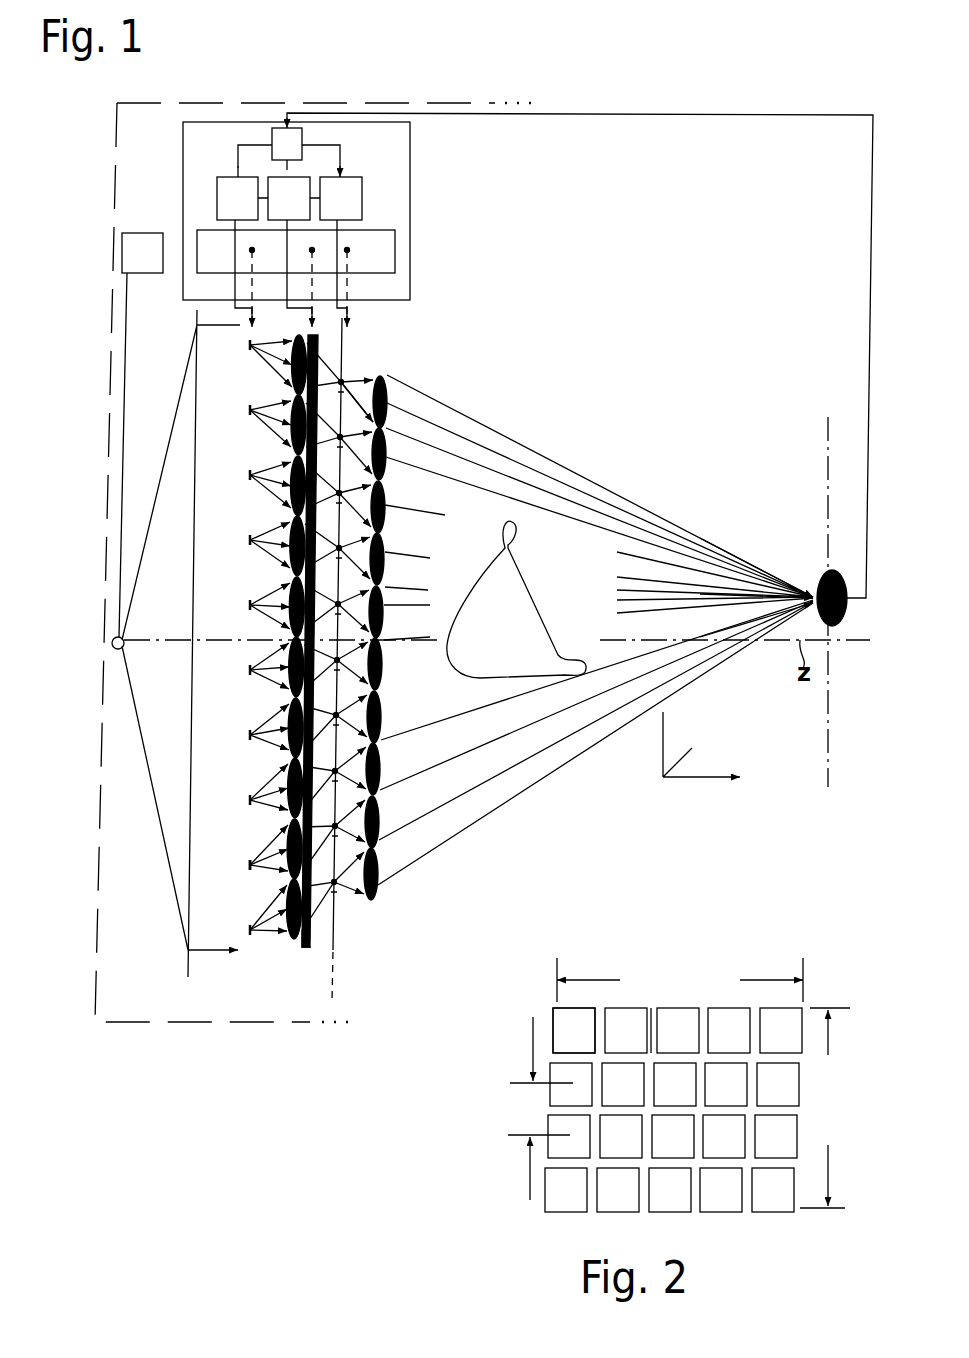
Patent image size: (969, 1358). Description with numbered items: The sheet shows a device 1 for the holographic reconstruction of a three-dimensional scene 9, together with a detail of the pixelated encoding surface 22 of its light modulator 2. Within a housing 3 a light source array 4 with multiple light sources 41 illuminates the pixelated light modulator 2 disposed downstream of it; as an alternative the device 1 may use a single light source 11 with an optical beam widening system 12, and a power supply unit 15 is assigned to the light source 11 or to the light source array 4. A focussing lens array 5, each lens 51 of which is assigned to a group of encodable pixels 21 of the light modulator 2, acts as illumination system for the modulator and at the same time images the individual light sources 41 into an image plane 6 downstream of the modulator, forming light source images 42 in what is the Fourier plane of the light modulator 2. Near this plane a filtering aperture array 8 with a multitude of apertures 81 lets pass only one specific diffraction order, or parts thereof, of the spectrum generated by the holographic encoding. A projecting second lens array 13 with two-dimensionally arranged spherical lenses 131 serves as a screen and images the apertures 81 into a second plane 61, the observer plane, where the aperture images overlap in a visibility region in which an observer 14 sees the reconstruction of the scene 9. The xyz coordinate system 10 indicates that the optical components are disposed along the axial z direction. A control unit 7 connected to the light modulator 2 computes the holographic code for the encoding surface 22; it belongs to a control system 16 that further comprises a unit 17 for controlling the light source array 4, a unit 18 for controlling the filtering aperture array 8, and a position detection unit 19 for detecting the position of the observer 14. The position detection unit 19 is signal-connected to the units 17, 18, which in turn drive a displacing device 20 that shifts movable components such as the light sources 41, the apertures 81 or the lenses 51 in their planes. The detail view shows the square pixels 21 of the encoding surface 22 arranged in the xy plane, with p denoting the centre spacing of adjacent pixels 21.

In FIG. 1, the device 1 is at (668, 100).
In FIG. 1, the light modulator 2 is at (342, 666).
In FIG. 2, the light modulator 2 is at (641, 1083).
In FIG. 1, the housing 3 is at (110, 343).
In FIG. 1, the light source array 4 is at (234, 679).
In FIG. 1, the focussing lens array 5 is at (272, 677).
In FIG. 1, the image plane 6 is at (334, 990).
In FIG. 1, the control unit 7 is at (294, 252).
In FIG. 1, the filtering aperture array 8 is at (366, 636).
In FIG. 1, the three-dimensional scene 9 is at (516, 599).
In FIG. 1, the xyz coordinate system 10 is at (668, 792).
In FIG. 1, the light source 11 is at (112, 644).
In FIG. 1, the optical beam widening system 12 is at (196, 603).
In FIG. 1, the second lens array 13 is at (414, 664).
In FIG. 1, the observer 14 is at (828, 572).
In FIG. 1, the power supply unit 15 is at (140, 236).
In FIG. 1, the control system 16 is at (411, 176).
In FIG. 1, the unit for controlling the light source array 17 is at (242, 252).
In FIG. 1, the unit for controlling the filtering aperture array 18 is at (341, 252).
In FIG. 1, the position detection unit 19 is at (283, 128).
In FIG. 1, the displacing device 20 is at (296, 251).
In FIG. 2, the pixels 21 is at (565, 1028).
In FIG. 1, the pixelated encoding surface 22 is at (300, 930).
In FIG. 2, the pixelated encoding surface 22 is at (648, 1003).
In FIG. 1, the light sources 41 is at (252, 864).
In FIG. 1, the light source images 42 is at (340, 832).
In FIG. 1, the lens 51 is at (290, 722).
In FIG. 1, the second plane 61 is at (825, 762).
In FIG. 1, the apertures 81 is at (338, 892).
In FIG. 1, the spherical lenses 131 is at (382, 871).